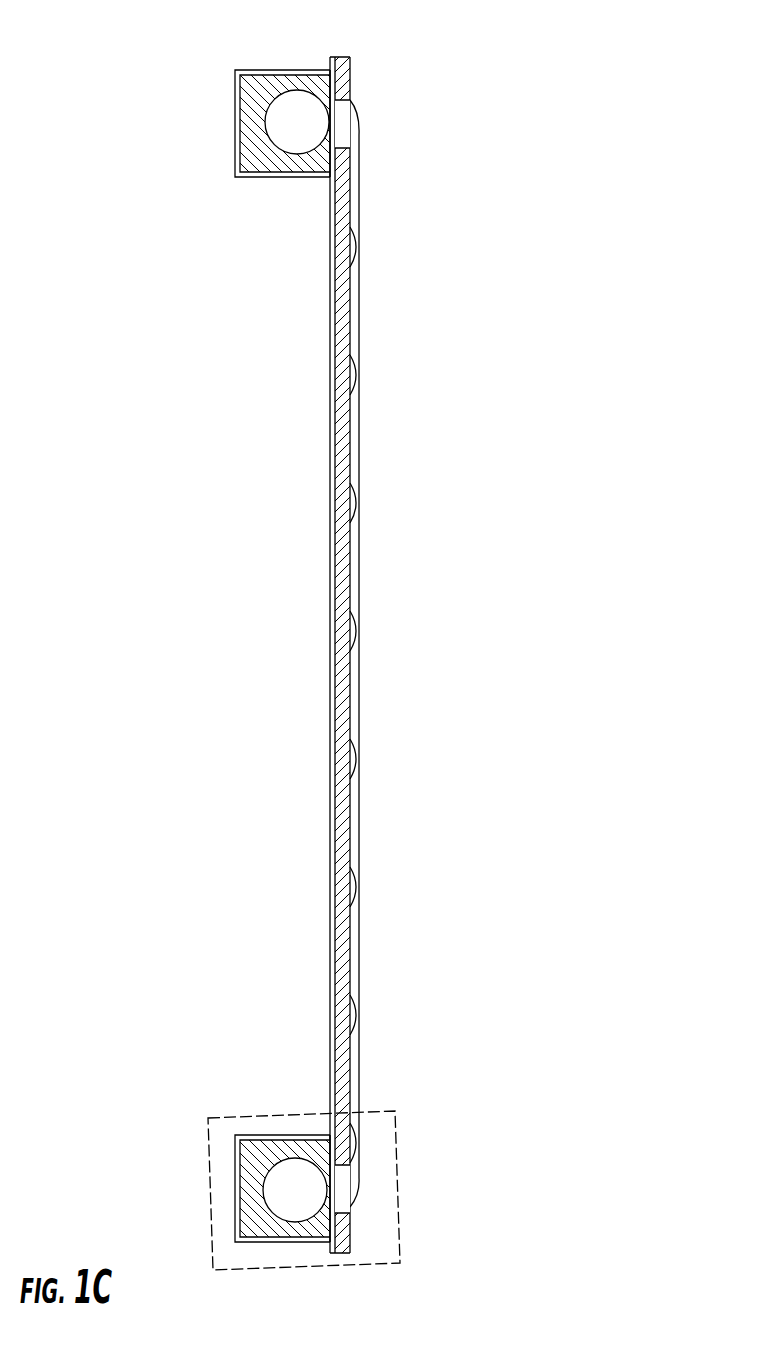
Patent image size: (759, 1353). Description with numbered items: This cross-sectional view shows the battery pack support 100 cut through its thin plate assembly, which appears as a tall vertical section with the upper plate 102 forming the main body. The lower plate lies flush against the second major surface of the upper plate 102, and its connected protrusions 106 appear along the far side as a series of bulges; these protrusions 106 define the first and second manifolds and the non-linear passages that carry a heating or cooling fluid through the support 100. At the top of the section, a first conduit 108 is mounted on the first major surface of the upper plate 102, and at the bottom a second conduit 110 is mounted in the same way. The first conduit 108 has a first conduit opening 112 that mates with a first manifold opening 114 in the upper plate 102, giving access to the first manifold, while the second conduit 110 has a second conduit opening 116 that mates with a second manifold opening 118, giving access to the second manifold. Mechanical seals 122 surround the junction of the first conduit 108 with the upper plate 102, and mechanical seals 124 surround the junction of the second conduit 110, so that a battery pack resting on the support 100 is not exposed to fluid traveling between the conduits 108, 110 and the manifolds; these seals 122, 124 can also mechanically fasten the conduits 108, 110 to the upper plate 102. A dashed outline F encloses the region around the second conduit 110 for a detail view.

The battery pack support 100 is at (327, 669).
The upper plate 102 is at (328, 777).
The connected protrusions 106 is at (360, 1005).
The first conduit 108 is at (280, 122).
The second conduit 110 is at (318, 1179).
The first conduit opening 112 is at (327, 118).
The first manifold opening 114 is at (338, 133).
The second conduit opening 116 is at (318, 1157).
The second manifold opening 118 is at (347, 1157).
The mechanical seal 122 is at (332, 80).
The mechanical seal 124 is at (330, 1137).
The detail region F is at (400, 1177).